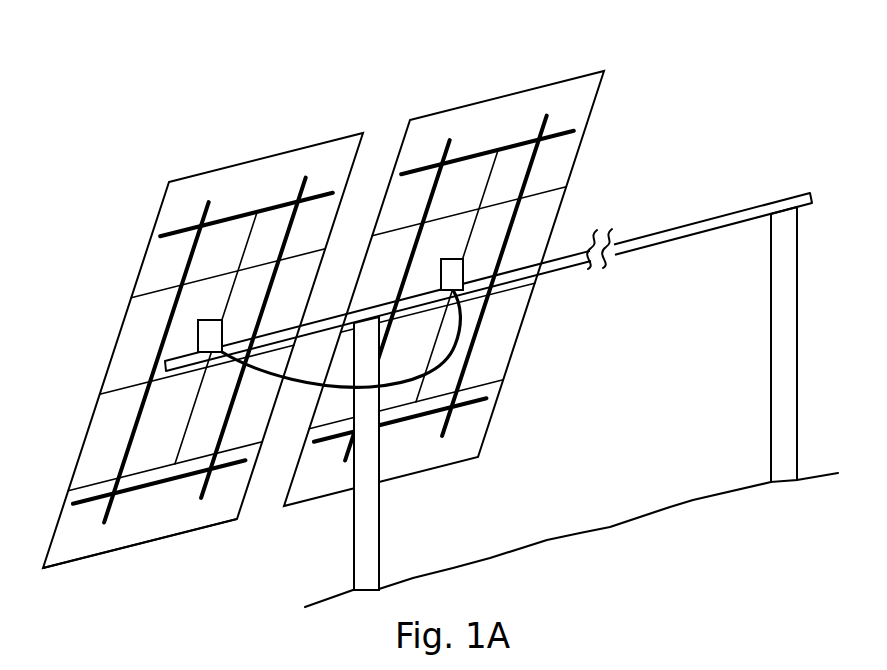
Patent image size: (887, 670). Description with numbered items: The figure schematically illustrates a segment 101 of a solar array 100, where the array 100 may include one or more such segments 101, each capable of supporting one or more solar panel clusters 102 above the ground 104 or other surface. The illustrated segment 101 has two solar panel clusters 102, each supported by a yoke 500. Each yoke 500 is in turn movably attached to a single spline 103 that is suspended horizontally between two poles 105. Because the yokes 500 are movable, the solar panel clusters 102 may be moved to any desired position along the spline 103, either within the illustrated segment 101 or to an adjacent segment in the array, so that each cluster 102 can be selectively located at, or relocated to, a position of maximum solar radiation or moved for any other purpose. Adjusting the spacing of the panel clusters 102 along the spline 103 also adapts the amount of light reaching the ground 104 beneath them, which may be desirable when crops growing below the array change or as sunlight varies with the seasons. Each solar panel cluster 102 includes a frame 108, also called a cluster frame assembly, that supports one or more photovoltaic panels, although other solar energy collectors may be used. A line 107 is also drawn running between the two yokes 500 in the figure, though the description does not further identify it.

The solar array 100 is at (146, 92).
The segment of a solar array 101 is at (684, 176).
The solar panel cluster 102 is at (310, 146).
The spline 103 is at (755, 207).
The ground 104 is at (684, 502).
The pole 105 is at (380, 533).
The cable 107 is at (458, 347).
The frame 108 is at (173, 534).
The yoke 500 is at (213, 328).